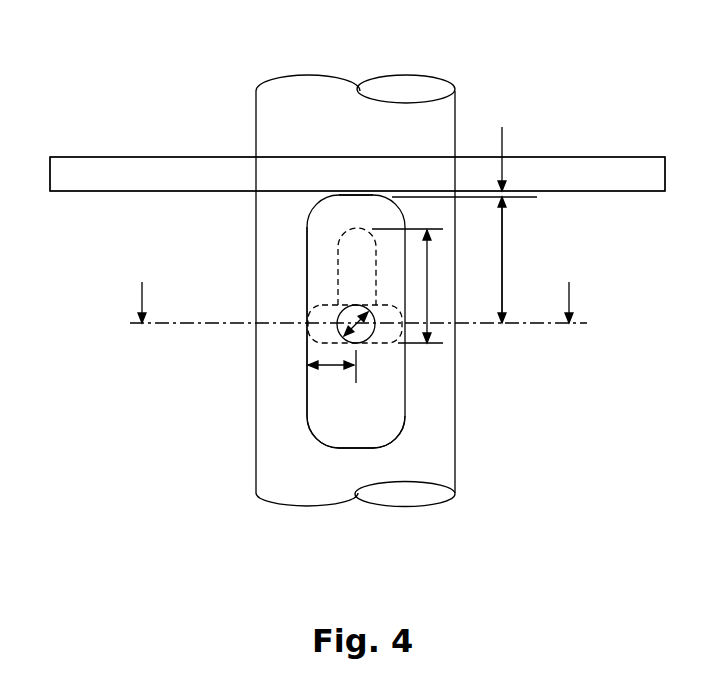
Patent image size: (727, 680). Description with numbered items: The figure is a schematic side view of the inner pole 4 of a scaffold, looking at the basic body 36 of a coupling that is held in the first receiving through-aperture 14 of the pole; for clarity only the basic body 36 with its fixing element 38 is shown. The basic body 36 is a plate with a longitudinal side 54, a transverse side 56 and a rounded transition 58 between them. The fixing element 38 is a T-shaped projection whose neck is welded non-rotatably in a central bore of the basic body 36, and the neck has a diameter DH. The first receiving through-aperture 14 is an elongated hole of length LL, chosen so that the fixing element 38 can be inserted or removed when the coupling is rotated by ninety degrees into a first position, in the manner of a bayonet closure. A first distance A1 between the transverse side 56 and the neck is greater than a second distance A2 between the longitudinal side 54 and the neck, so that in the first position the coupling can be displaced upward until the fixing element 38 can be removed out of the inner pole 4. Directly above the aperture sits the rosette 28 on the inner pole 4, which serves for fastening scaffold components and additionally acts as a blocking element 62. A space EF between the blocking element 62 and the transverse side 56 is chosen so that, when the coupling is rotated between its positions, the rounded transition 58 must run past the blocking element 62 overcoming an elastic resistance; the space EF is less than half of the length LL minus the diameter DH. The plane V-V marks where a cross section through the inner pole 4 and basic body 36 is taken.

The inner pole 4 is at (420, 448).
The rosette 28 is at (115, 177).
The blocking element 62 is at (357, 174).
The rounded transition 58 is at (320, 207).
The transverse side 56 is at (362, 193).
The longitudinal side 54 is at (302, 390).
The basic body 36 is at (368, 420).
The first receiving through-aperture 14 is at (350, 252).
The fixing element 38 is at (310, 335).
The diameter of the neck DH is at (365, 342).
The plane V- V is at (360, 310).
The space EF is at (503, 197).
The first distance A1 is at (503, 260).
The length of the first elongated hole LL is at (428, 302).
The second distance A2 is at (327, 367).